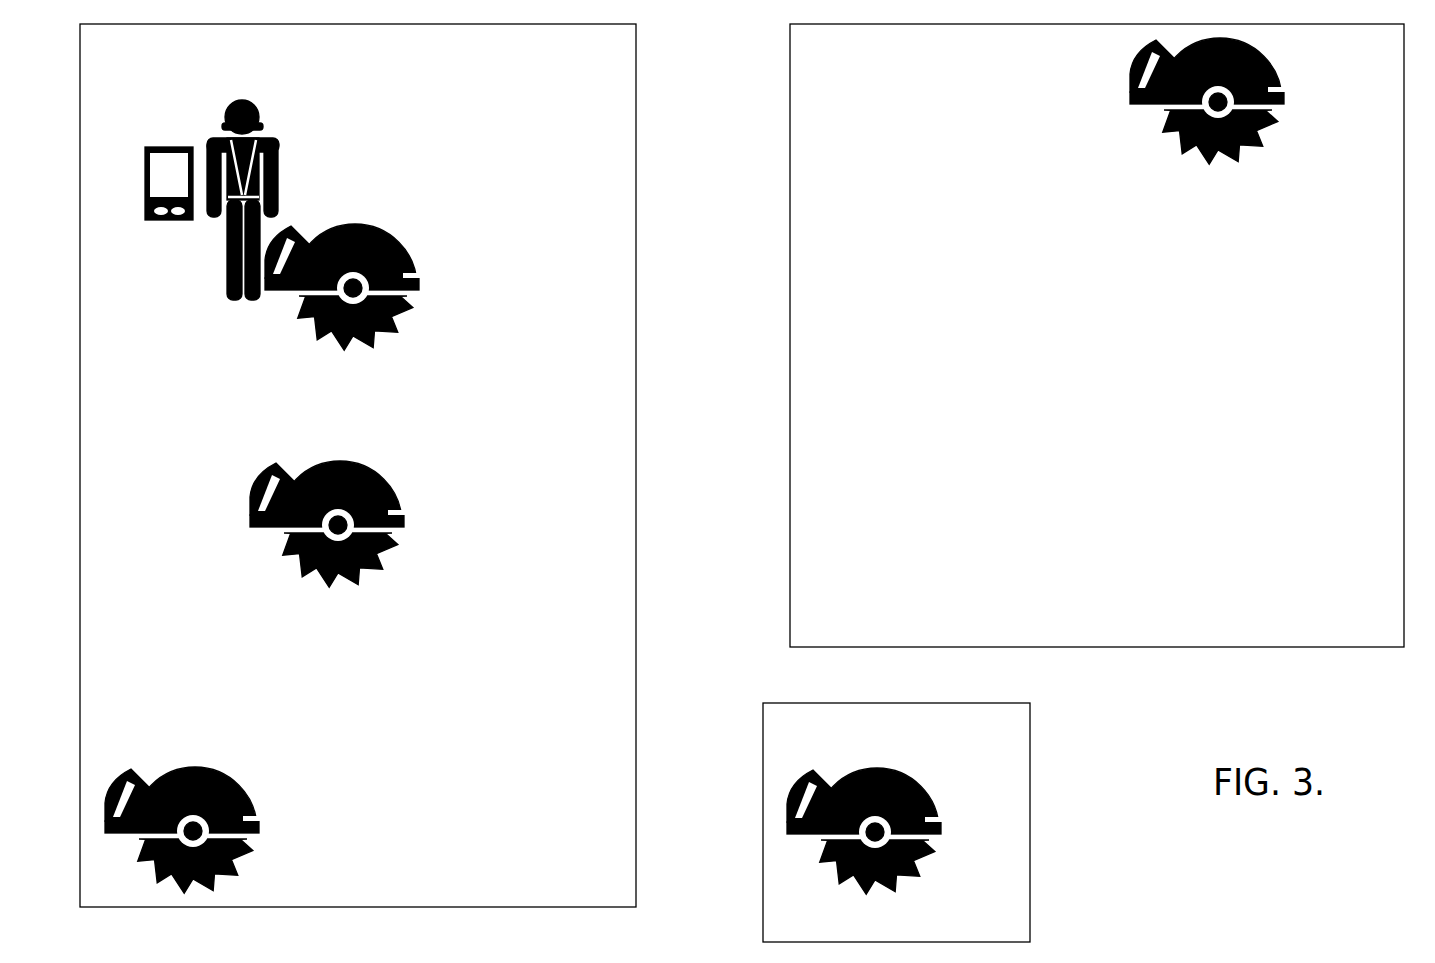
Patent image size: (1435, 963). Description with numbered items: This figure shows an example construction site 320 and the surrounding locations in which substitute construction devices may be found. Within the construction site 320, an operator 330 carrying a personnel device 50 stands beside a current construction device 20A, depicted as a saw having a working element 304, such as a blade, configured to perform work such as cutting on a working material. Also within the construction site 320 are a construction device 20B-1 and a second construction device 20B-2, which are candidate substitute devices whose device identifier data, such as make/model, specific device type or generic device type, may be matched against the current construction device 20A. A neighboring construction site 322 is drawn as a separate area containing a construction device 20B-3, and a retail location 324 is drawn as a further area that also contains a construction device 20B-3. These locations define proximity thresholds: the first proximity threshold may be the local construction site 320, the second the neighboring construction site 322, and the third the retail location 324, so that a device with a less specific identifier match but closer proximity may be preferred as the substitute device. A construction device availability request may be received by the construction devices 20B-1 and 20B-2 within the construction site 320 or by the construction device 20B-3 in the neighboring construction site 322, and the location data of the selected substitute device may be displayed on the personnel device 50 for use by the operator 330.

The personnel device 50 is at (162, 147).
The operator 330 is at (260, 120).
The current construction device 20A is at (382, 282).
The working element 304 is at (399, 326).
The construction device 20B-1 is at (356, 500).
The second construction device 20B-2 is at (212, 807).
The construction device 20B-3 is at (1036, 466).
The construction site 320 is at (636, 338).
The neighboring construction site 322 is at (790, 397).
The retail location 324 is at (797, 707).